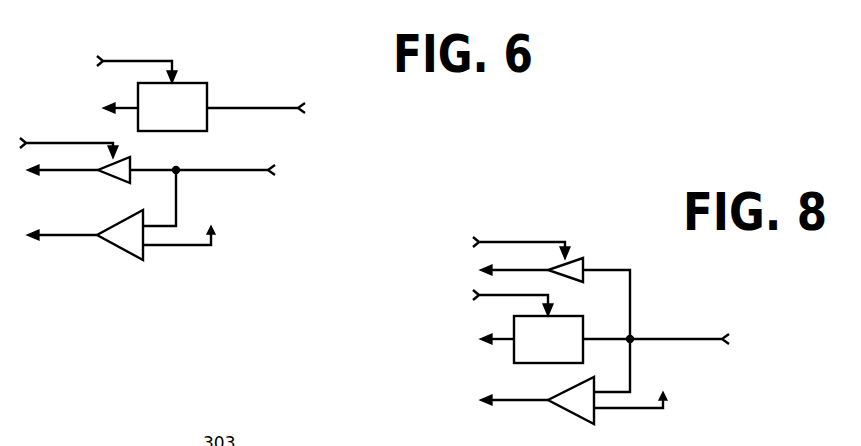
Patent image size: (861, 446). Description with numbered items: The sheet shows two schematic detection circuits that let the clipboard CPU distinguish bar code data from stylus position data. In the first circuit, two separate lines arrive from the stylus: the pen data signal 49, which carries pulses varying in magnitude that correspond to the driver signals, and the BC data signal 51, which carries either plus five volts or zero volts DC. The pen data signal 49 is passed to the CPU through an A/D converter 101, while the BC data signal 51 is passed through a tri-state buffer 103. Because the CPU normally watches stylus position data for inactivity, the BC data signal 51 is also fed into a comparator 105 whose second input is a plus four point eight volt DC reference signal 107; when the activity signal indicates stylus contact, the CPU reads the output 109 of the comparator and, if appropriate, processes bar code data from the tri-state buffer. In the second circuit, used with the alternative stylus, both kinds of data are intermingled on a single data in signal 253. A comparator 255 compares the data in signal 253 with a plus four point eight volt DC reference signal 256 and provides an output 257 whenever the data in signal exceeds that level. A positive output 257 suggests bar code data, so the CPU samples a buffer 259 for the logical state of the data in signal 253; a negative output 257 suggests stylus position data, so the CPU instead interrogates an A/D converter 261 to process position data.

In FIG. 6, the A/D converter 101 is at (187, 82).
In FIG. 6, the pen data signal 49 is at (245, 108).
In FIG. 6, the BC data signal 51 is at (243, 169).
In FIG. 6, the tri-state buffer 103 is at (100, 177).
In FIG. 6, the comparator 105 is at (130, 213).
In FIG. 6, the reference signal 107 is at (188, 247).
In FIG. 6, the output 109 is at (73, 237).
In FIG. 8, the buffer 259 is at (577, 257).
In FIG. 8, the A/D converter 261 is at (513, 360).
In FIG. 8, the data in signal 253 is at (647, 337).
In FIG. 8, the comparator 255 is at (573, 384).
In FIG. 8, the output 257 is at (517, 402).
In FIG. 8, the reference signal 256 is at (663, 408).